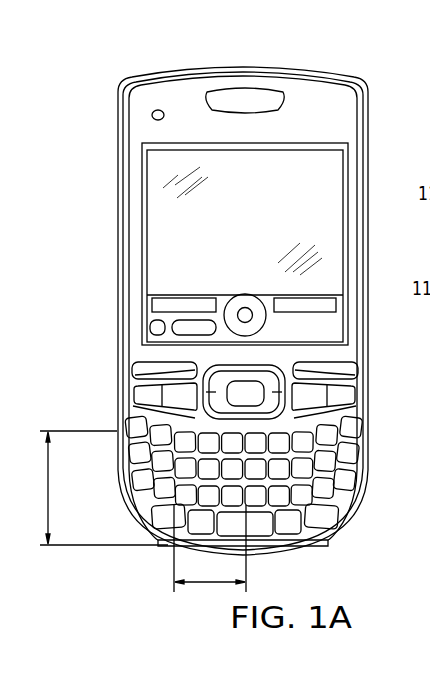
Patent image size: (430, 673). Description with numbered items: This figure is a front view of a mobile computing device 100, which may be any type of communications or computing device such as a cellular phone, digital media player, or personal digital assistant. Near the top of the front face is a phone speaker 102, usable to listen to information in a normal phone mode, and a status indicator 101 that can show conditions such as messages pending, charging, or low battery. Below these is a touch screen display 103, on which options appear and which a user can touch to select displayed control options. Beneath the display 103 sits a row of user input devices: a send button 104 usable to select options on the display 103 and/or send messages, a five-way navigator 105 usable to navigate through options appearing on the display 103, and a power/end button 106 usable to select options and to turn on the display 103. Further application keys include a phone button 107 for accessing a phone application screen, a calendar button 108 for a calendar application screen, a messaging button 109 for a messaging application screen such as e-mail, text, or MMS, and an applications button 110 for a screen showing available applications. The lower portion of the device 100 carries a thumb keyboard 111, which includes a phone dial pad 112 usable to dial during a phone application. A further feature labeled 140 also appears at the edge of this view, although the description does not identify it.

The mobile computing device 100 is at (82, 288).
The status indicator 101 is at (150, 108).
The phone speaker 102 is at (243, 82).
The touch screen display 103 is at (236, 223).
The send button 104 is at (160, 362).
The 5-way navigator 105 is at (267, 380).
The power/end button 106 is at (330, 361).
The phone button 107 is at (122, 406).
The calendar button 108 is at (242, 476).
The messaging button 109 is at (306, 428).
The applications button 110 is at (366, 408).
The thumb keyboard 111 is at (40, 490).
The phone dial pad 112 is at (210, 588).
The device edge feature 140 is at (429, 552).